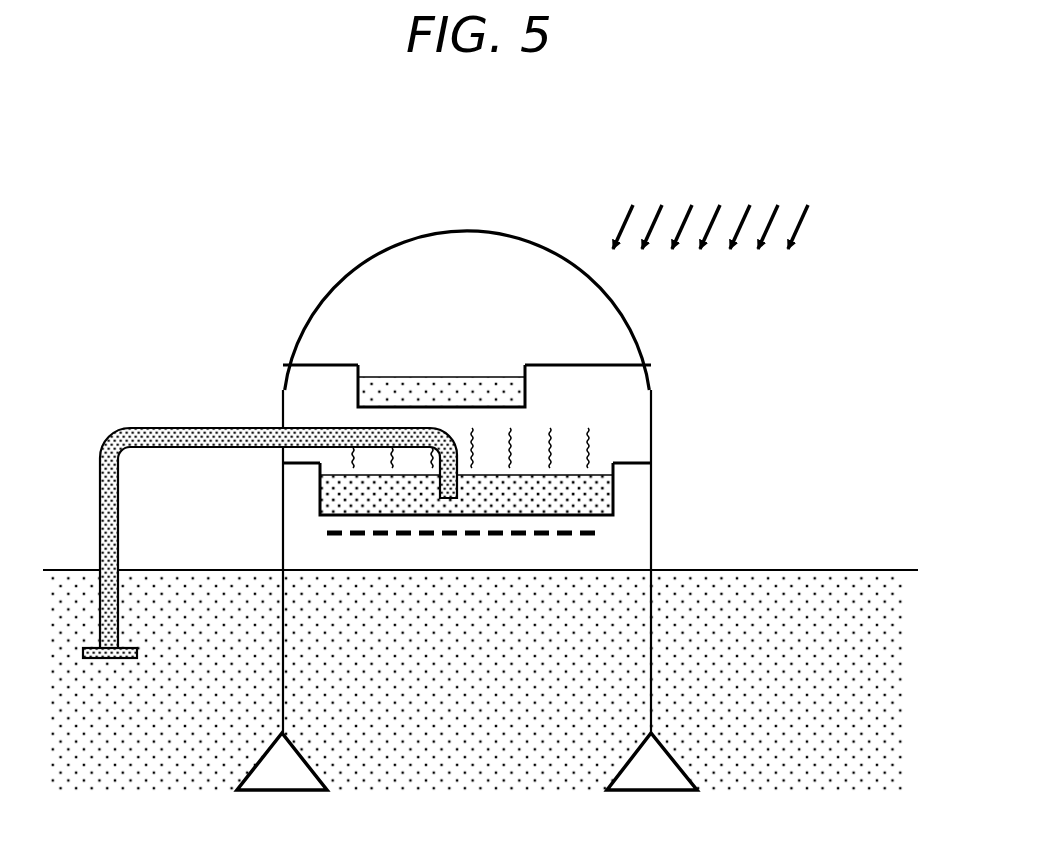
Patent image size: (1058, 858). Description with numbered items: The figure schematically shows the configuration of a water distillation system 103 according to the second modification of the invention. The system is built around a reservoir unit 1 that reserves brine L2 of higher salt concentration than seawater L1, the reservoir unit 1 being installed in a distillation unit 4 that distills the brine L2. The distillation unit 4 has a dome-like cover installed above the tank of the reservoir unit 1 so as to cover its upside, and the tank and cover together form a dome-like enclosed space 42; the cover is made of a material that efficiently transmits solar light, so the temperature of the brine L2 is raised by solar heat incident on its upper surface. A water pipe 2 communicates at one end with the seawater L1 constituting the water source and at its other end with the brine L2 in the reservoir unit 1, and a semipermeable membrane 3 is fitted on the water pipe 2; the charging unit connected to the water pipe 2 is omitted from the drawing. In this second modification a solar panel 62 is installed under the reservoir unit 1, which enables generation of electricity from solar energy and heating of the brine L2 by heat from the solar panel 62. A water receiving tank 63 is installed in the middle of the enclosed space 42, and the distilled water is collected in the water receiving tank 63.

The water distillation system 103 is at (445, 469).
The distillation unit 4 is at (467, 502).
The dome-like enclosed space 42 is at (517, 267).
The water receiving tank 63 is at (525, 385).
The solar panel 62 is at (601, 538).
The reservoir unit 1 is at (522, 519).
The water pipe 2 is at (205, 428).
The semipermeable membrane 3 is at (112, 660).
The seawater L1 is at (800, 583).
The brine L2 is at (368, 500).